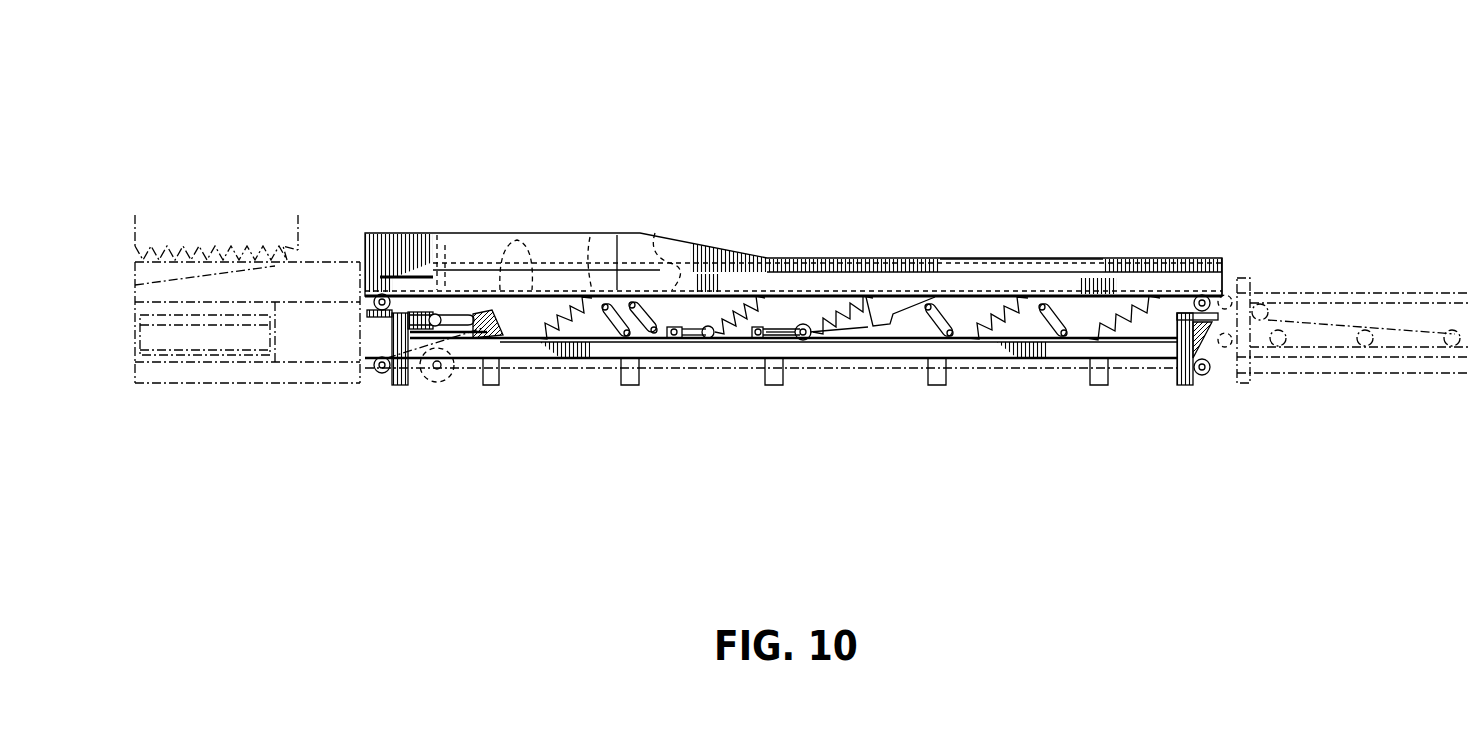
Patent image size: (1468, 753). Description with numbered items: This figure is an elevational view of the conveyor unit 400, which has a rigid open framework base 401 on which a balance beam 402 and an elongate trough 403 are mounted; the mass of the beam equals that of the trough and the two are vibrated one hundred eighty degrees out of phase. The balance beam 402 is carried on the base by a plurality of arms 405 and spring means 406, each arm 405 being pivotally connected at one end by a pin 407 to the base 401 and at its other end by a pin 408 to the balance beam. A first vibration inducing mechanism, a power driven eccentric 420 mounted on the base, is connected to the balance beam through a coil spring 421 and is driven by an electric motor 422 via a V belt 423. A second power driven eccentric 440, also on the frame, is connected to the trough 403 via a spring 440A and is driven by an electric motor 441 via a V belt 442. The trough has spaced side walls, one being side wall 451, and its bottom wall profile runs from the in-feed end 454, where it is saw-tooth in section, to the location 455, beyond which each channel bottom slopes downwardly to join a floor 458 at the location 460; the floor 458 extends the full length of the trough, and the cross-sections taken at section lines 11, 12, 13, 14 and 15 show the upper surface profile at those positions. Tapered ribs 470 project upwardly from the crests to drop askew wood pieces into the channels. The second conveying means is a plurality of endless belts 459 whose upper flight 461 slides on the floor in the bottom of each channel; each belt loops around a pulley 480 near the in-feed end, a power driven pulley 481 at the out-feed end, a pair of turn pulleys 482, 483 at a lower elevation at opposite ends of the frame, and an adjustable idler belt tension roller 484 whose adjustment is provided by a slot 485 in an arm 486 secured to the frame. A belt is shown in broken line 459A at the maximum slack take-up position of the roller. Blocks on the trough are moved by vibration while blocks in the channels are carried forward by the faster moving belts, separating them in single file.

The conveyor unit 400 is at (875, 120).
The framework base 401 is at (1063, 358).
The balance beam 402 is at (1150, 272).
The trough 403 is at (980, 250).
The arm 405 is at (1075, 300).
The spring means 406 is at (1010, 308).
The pin 407 is at (950, 334).
The pin 408 is at (945, 300).
The power driven eccentric 420 is at (805, 326).
The coil spring 421 is at (850, 334).
The electric motor 422 is at (757, 330).
The V belt 423 is at (798, 336).
The power driven eccentric 440 is at (710, 330).
The spring 440A is at (760, 338).
The electric motor 441 is at (675, 326).
The V belt 442 is at (690, 340).
The side wall 451 is at (620, 255).
The in-feed end 454 is at (360, 262).
The location 455 is at (518, 233).
The floor 458 is at (437, 233).
The endless belt 459 is at (430, 347).
The belt in broken line 459A is at (452, 380).
The location 460 is at (547, 262).
The upper flight 461 is at (385, 295).
The tapered rib 470 is at (590, 237).
The pulley 480 is at (375, 297).
The power driven pulley 481 is at (1212, 296).
The turn pulley 482 is at (1205, 376).
The turn pulley 483 is at (375, 362).
The idler belt tension roller 484 is at (433, 313).
The slot 485 is at (440, 315).
The arm 486 is at (505, 330).
The section line 11 is at (569, 550).
The section line 12 is at (723, 550).
The section line 13 is at (418, 75).
The section line 14 is at (458, 550).
The section line 15 is at (1227, 550).